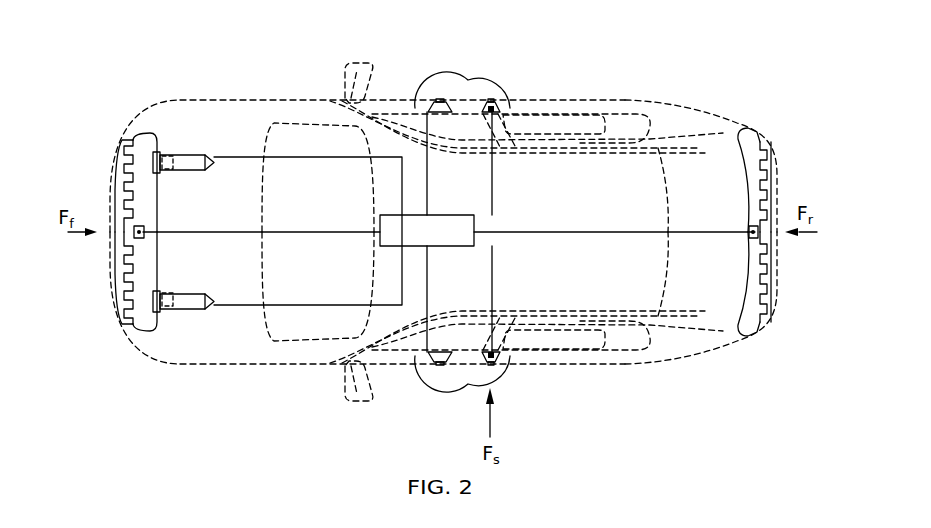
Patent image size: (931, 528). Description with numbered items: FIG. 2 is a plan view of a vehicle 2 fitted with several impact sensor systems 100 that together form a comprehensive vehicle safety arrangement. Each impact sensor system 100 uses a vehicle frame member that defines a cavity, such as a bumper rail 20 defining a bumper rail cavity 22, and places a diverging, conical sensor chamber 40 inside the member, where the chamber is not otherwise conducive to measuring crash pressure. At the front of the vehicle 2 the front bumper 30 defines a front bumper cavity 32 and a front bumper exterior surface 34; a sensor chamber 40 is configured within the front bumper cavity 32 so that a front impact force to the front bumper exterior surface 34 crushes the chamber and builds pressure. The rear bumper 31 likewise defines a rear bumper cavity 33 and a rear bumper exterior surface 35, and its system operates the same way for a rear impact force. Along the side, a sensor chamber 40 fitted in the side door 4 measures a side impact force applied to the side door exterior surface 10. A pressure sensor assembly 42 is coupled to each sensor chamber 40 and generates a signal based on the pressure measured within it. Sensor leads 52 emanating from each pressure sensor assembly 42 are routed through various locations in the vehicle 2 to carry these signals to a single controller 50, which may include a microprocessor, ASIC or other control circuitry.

The vehicle 2 is at (138, 74).
The side door 4 is at (380, 107).
The side door exterior surface 10 is at (398, 100).
The bumper rail 20 is at (177, 172).
The bumper rail cavity 22 is at (208, 160).
The front bumper 30 is at (120, 256).
The rear bumper 31 is at (770, 163).
The front bumper cavity 32 is at (143, 273).
The rear bumper cavity 33 is at (762, 263).
The front bumper exterior surface 34 is at (110, 300).
The rear bumper exterior surface 35 is at (773, 298).
The sensor chamber 40 is at (132, 352).
The pressure sensor assembly 42 is at (163, 153).
The controller 50 is at (443, 214).
The sensor leads 52 is at (297, 158).
The impact sensor system 100 is at (190, 138).